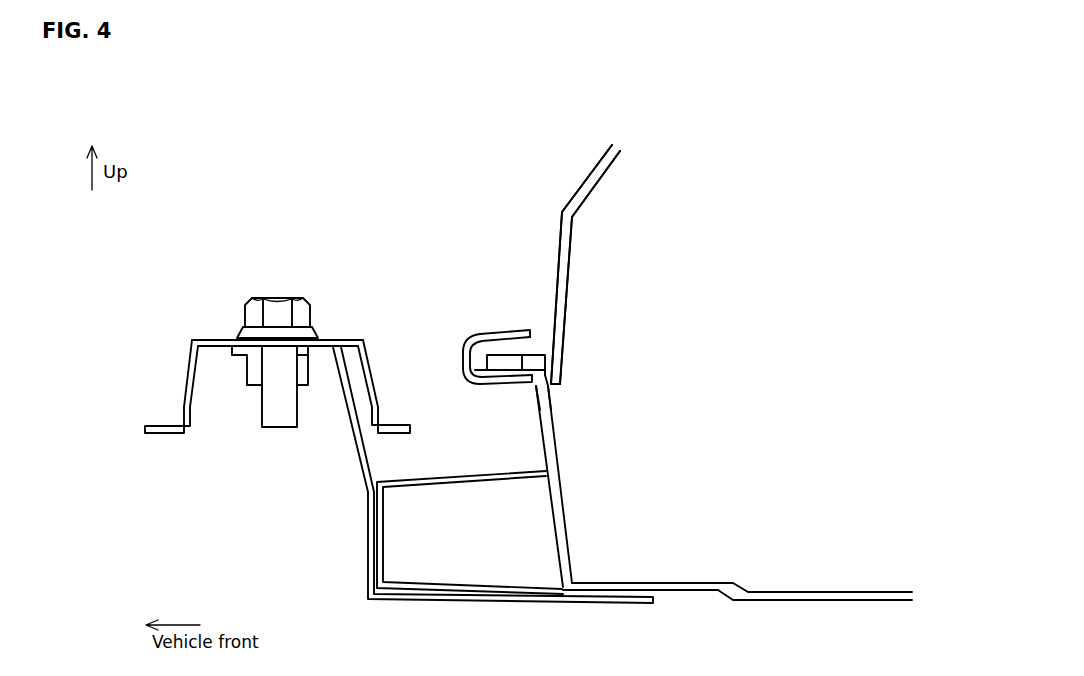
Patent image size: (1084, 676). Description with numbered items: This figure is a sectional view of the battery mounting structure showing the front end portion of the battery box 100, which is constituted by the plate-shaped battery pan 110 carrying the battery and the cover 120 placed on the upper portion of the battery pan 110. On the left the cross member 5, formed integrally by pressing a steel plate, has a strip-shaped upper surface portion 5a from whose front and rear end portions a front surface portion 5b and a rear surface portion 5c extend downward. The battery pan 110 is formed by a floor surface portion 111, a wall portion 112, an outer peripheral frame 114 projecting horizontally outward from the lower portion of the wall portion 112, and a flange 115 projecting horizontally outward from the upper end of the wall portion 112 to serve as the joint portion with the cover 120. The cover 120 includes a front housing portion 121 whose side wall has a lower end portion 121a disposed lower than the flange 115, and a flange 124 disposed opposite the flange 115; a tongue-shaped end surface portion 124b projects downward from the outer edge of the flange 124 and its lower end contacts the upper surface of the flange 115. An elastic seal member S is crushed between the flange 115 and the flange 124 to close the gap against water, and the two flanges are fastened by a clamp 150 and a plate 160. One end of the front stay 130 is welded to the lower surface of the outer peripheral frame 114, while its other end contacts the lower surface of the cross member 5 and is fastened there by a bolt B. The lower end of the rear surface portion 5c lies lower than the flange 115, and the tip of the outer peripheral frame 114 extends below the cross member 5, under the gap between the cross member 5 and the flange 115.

The cross member 5 is at (166, 320).
The upper surface portion 5a is at (222, 340).
The front surface portion 5b is at (187, 405).
The rear surface portion 5c is at (374, 407).
The bolt B is at (272, 300).
The seal member S is at (505, 360).
The battery box 100 is at (400, 205).
The battery pan 110 is at (700, 481).
The floor surface portion 111 is at (740, 594).
The wall portion 112 is at (560, 540).
The outer peripheral frame 114 is at (487, 472).
The flange 115 is at (495, 372).
The cover 120 is at (560, 232).
The front housing portion 121 is at (585, 264).
The lower end portion 121a is at (487, 360).
The flange 124 is at (516, 352).
The end surface portion 124b is at (553, 388).
The front stay 130 is at (355, 433).
The clamp 150 is at (478, 332).
The plate 160 is at (480, 345).